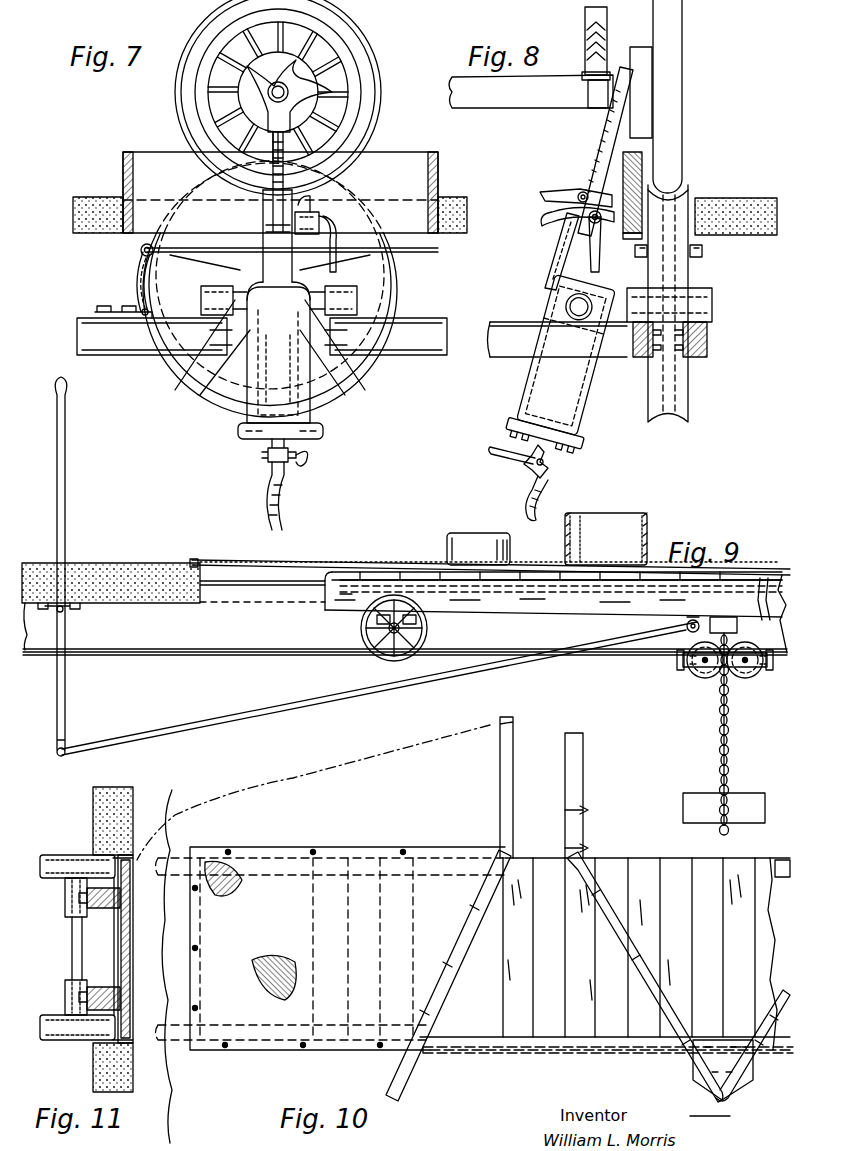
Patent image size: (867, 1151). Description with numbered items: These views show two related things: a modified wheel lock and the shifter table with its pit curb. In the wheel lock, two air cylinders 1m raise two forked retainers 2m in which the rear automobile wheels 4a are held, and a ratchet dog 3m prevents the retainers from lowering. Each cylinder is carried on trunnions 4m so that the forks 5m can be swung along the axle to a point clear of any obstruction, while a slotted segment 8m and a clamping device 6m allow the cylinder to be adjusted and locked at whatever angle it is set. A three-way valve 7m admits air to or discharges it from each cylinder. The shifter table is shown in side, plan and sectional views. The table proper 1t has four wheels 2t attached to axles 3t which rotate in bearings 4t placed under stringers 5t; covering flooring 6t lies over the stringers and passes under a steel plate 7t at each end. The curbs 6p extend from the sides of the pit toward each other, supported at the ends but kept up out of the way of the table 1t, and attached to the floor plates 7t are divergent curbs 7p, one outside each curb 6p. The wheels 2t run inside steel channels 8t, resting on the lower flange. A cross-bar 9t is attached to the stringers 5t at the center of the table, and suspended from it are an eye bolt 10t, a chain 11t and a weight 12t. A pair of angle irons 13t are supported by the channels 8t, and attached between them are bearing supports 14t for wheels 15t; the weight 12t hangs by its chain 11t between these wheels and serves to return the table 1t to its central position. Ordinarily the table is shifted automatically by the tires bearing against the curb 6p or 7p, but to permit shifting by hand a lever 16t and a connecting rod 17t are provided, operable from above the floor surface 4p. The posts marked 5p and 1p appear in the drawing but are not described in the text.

In FIG. 7, the fork 5m is at (250, 66).
In FIG. 8, the fork 5m is at (620, 90).
In FIG. 7, the clamping device 6m is at (345, 255).
In FIG. 8, the clamping device 6m is at (590, 255).
In FIG. 7, the trunnion 4m is at (360, 300).
In FIG. 8, the trunnion 4m is at (572, 300).
In FIG. 8, the forked retainer 2m is at (600, 138).
In FIG. 8, the ratchet dog 3m is at (545, 190).
In FIG. 8, the slotted segment 8m is at (538, 226).
In FIG. 8, the rear automobile wheel 4a is at (663, 155).
In FIG. 8, the air cylinder 1m is at (522, 388).
In FIG. 8, the 3-way valve 7m is at (560, 462).
In FIG. 9, the lever 16t is at (68, 495).
In FIG. 9, the floor surface 4p is at (134, 563).
In FIG. 9, the steel plate 7t is at (232, 568).
In FIG. 10, the steel plate 7t is at (245, 880).
In FIG. 9, the covering flooring 6t is at (310, 590).
In FIG. 11, the covering flooring 6t is at (120, 945).
In FIG. 9, the bearing 4t is at (368, 630).
In FIG. 11, the bearing 4t is at (65, 910).
In FIG. 9, the wheel 2t is at (428, 632).
In FIG. 11, the wheel 2t is at (60, 882).
In FIG. 9, the axle 3t is at (370, 655).
In FIG. 11, the axle 3t is at (75, 950).
In FIG. 9, the steel channel 8t is at (125, 655).
In FIG. 11, the steel channel 8t is at (60, 857).
In FIG. 9, the connecting rod 17t is at (265, 710).
In FIG. 9, the divergent curb 7p is at (445, 545).
In FIG. 10, the divergent curb 7p is at (455, 977).
In FIG. 9, the curb 6p is at (606, 539).
In FIG. 10, the curb 6p is at (640, 968).
In FIG. 9, the stringer 5t is at (532, 618).
In FIG. 11, the stringer 5t is at (114, 912).
In FIG. 9, the eye bolt 10t is at (720, 615).
In FIG. 9, the cross-bar 9t is at (740, 626).
In FIG. 9, the angle iron 13t is at (680, 665).
In FIG. 9, the bearing support 14t is at (700, 676).
In FIG. 9, the wheel 15t is at (712, 680).
In FIG. 9, the chain 11t is at (728, 732).
In FIG. 9, the weight 12t is at (745, 793).
In FIG. 10, the post 5p is at (522, 787).
In FIG. 10, the post 1p is at (572, 771).
In FIG. 10, the table proper 1t is at (606, 955).